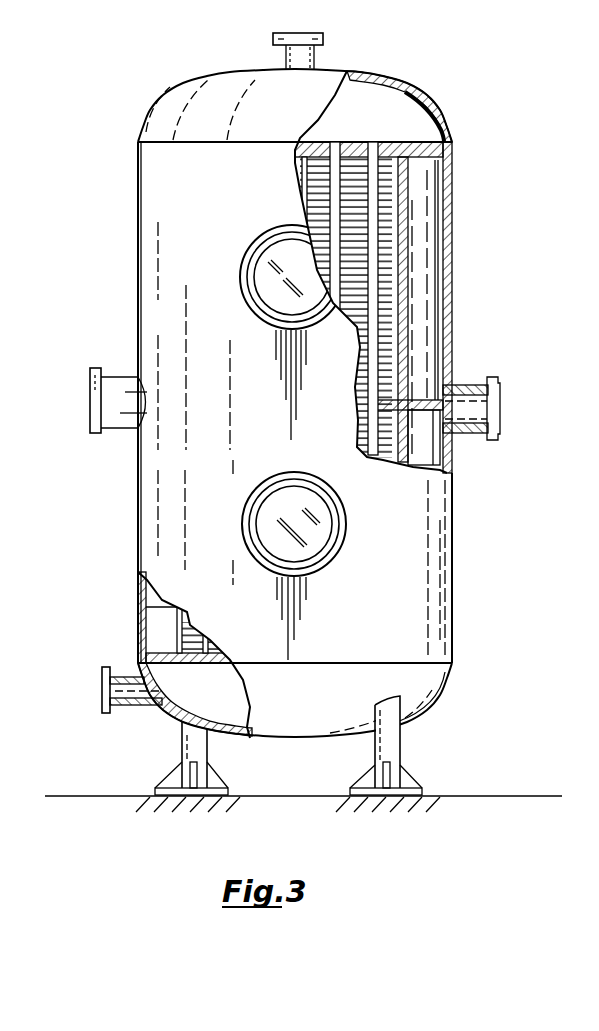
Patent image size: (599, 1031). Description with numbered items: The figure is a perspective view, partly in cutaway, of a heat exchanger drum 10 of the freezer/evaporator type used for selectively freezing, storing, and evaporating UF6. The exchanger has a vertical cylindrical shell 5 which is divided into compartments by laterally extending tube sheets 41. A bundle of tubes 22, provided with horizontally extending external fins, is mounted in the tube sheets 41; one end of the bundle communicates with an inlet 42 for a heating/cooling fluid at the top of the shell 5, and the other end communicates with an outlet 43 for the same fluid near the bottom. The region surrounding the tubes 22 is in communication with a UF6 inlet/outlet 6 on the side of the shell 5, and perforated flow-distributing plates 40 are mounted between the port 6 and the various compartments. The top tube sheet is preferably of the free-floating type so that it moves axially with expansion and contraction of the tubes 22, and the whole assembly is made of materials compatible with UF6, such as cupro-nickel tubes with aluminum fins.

The heat exchanger drum (freezer/evaporator) 10 is at (301, 412).
The vertical cylindrical shell 5 is at (440, 116).
The UF6 inlet/outlet 6 is at (462, 385).
The bundle of tubes 22 is at (372, 147).
The perforated flow-distributing plates 40 is at (400, 257).
The tube sheets 41 is at (353, 148).
The inlet 42 is at (325, 43).
The outlet 43 is at (102, 705).